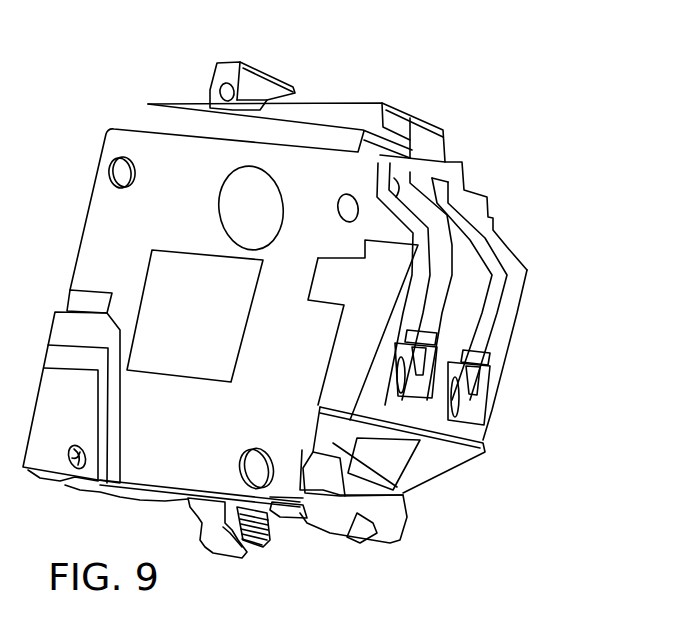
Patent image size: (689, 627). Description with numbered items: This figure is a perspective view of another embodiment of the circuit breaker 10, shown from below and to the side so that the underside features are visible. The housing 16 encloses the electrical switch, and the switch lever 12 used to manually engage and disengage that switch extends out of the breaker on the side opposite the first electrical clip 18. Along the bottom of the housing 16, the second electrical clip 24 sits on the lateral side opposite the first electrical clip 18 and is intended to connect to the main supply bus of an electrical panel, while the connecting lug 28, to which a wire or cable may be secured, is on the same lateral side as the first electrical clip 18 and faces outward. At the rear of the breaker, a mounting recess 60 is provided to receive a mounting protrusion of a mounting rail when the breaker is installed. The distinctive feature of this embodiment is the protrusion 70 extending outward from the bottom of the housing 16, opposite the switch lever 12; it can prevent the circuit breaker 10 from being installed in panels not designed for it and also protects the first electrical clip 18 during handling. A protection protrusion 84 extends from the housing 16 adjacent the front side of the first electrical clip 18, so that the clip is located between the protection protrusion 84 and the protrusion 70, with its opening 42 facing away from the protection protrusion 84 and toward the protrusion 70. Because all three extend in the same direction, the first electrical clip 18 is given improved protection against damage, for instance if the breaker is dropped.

The circuit breaker 10 is at (66, 137).
The switch lever 12 is at (291, 80).
The housing 16 is at (84, 228).
The first electrical clip 18 is at (272, 553).
The second electrical clip 24 is at (66, 484).
The connecting lug 28 is at (408, 398).
The opening 42 is at (286, 543).
The mounting recess 60 is at (365, 533).
The protrusion 70 is at (358, 527).
The protection protrusion 84 is at (207, 543).